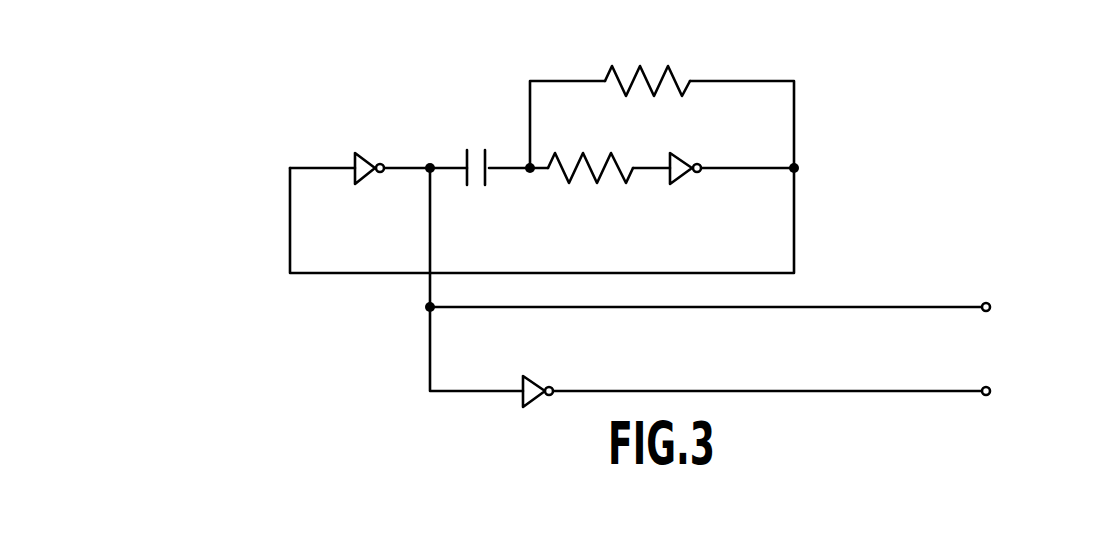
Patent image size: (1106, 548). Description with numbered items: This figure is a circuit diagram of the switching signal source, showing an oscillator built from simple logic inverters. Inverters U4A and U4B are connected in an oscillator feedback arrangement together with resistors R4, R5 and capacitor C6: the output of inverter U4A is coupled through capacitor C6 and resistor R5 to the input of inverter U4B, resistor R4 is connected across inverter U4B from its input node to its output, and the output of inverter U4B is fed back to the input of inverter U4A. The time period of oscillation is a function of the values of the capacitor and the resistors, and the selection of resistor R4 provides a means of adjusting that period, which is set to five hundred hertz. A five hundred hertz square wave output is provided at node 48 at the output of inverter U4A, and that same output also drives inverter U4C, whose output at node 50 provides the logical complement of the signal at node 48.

The inverter U4A is at (362, 147).
The capacitor C6 is at (477, 150).
The resistor R5 is at (590, 150).
The inverter U4B is at (700, 150).
The resistor R4 is at (647, 60).
The inverter U4C is at (543, 372).
The node 48 is at (989, 303).
The node 50 is at (989, 387).